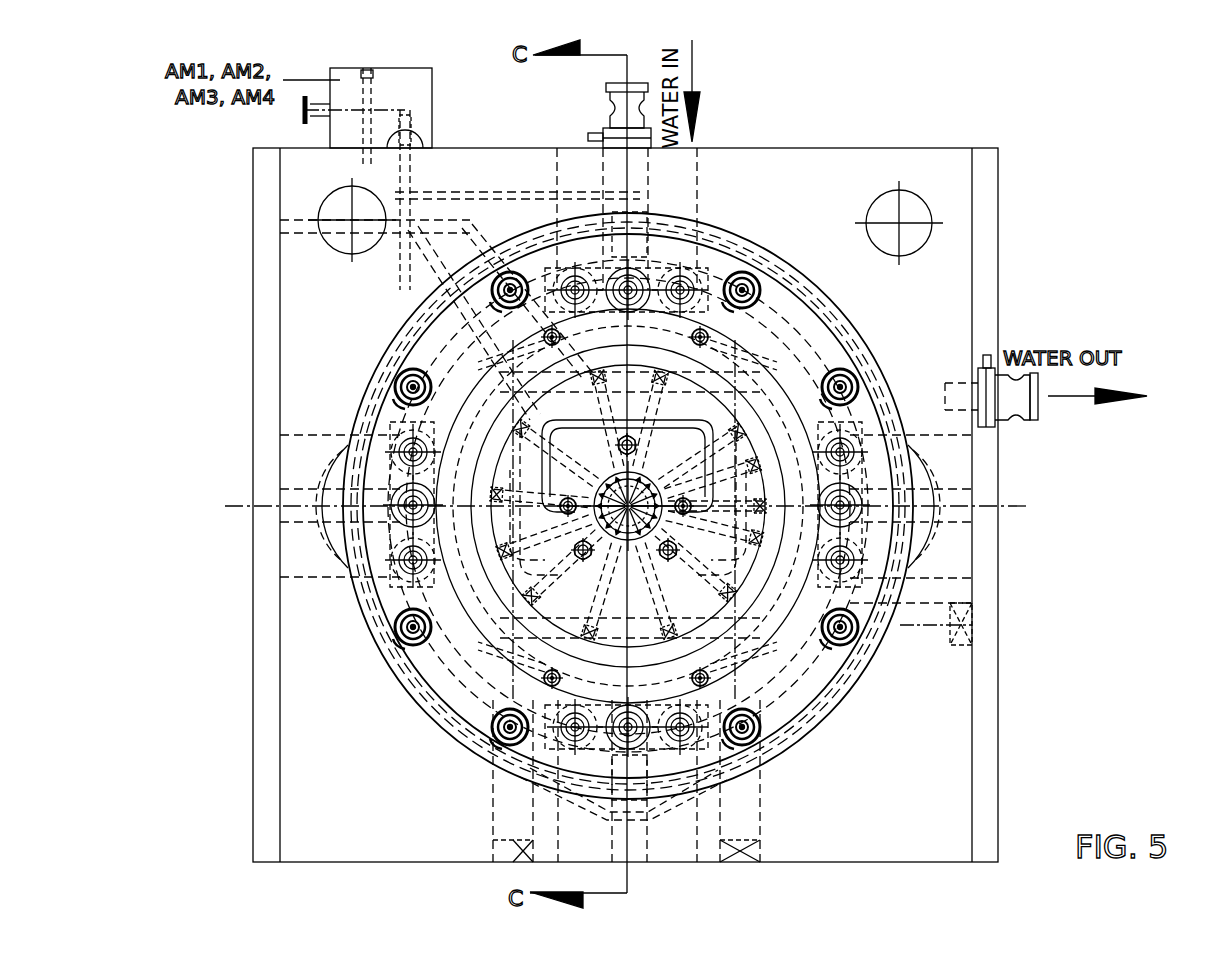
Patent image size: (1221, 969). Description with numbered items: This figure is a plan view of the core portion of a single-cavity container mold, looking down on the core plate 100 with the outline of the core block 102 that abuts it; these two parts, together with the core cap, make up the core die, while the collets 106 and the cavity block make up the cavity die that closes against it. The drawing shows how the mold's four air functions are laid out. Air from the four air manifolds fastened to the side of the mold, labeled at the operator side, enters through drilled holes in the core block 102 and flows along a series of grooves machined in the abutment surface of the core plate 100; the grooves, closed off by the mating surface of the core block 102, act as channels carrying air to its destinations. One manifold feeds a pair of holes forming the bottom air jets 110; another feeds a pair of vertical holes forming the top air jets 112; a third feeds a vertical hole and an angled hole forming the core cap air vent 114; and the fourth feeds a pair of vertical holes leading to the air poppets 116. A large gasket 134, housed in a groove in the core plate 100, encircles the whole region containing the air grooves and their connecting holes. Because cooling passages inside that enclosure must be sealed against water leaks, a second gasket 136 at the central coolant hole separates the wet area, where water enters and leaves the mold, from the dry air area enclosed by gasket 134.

The core plate 100 is at (985, 278).
The core block 102 is at (935, 265).
The collets 106 is at (802, 528).
The bottom air jets 110 is at (555, 672).
The top air jets 112 is at (557, 272).
The air vent 114 is at (574, 552).
The air poppets 116 is at (542, 493).
The large gasket 134 is at (476, 190).
The gasket 136 is at (690, 470).